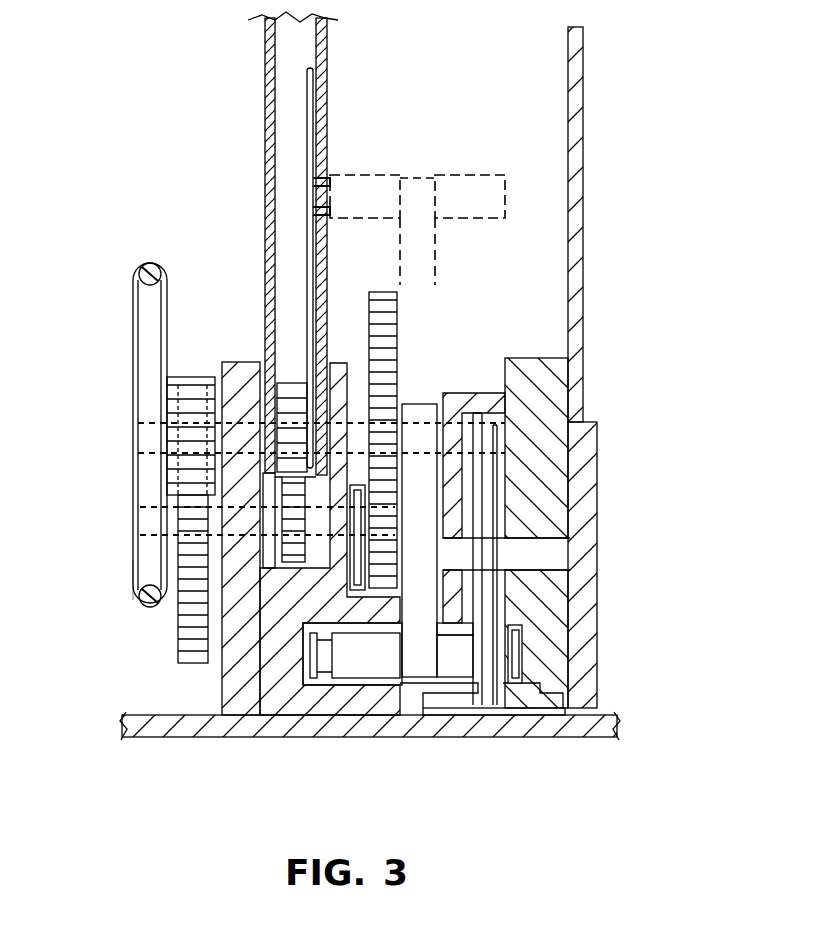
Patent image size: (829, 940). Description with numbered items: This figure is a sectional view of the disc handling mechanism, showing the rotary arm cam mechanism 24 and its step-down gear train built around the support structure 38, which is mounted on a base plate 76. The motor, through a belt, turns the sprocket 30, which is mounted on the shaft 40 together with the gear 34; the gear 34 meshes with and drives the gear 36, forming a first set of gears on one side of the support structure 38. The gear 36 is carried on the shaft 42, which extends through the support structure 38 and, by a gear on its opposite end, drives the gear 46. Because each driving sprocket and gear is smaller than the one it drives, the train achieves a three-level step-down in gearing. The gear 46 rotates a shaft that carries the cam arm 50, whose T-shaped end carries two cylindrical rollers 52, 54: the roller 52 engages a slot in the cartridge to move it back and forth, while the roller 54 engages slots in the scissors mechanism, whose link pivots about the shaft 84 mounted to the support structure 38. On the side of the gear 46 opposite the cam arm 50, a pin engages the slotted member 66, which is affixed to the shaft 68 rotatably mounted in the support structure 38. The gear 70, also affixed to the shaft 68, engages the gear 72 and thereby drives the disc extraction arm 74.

The rotary arm cam mechanism 24 is at (197, 192).
The sprocket 30 is at (133, 567).
The gear 34 is at (183, 377).
The gear 36 is at (178, 645).
The support structure 38 is at (222, 697).
The shaft 40 is at (150, 417).
The shaft 42 is at (215, 520).
The gear 46 is at (397, 320).
The cam arm 50 is at (420, 404).
The cylindrical roller 52 is at (352, 668).
The cylindrical roller 54 is at (450, 668).
The slotted member 66 is at (360, 590).
The shaft 68 is at (320, 590).
The gear 70 is at (262, 575).
The gear 72 is at (290, 383).
The disc extraction arm 74 is at (310, 116).
The base plate 76 is at (588, 737).
The shaft 84 is at (563, 553).